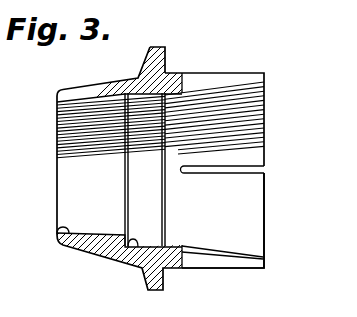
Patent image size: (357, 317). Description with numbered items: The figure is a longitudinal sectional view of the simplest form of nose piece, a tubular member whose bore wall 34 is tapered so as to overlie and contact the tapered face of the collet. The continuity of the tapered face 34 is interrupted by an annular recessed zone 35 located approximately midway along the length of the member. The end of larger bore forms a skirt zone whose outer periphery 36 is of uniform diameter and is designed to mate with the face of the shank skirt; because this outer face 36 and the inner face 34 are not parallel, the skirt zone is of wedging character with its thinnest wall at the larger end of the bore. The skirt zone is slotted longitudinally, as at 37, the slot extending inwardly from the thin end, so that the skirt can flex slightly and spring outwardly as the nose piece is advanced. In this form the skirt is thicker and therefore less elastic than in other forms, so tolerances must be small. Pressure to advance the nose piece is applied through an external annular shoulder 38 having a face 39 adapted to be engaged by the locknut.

The wall of the bore 34 is at (58, 232).
The annular recessed zone 35 is at (128, 247).
The periphery of the skirt zone 36 is at (222, 268).
The slot 37 is at (296, 166).
The external annular shoulder 38 is at (166, 64).
The face of the shoulder 39 is at (144, 62).